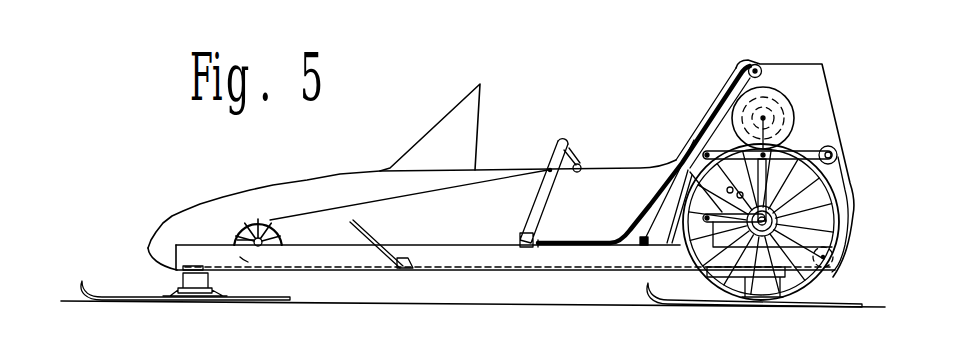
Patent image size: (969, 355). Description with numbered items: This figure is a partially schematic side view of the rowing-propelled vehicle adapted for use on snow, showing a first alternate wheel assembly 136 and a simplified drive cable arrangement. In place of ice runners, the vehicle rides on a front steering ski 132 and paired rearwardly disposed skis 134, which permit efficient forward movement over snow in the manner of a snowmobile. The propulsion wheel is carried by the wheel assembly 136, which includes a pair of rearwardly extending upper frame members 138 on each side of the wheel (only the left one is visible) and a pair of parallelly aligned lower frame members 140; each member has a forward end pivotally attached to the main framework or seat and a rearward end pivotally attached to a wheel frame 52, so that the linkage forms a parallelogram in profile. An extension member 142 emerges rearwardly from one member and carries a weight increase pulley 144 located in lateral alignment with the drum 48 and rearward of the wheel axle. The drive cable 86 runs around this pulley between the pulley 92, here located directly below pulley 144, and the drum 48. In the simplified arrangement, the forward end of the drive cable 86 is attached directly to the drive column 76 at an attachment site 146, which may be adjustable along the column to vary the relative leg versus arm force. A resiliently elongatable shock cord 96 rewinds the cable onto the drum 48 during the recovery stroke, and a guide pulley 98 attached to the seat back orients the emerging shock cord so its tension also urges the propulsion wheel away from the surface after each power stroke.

The drum 48 is at (772, 90).
The wheel frame 52 is at (770, 173).
The drive column 76 is at (533, 209).
The drive cable 86 is at (327, 205).
The pulley 92 is at (848, 238).
The shock cord 96 is at (730, 99).
The guide pulley 98 is at (743, 62).
The front steering ski 132 is at (142, 295).
The rearwardly disposed skis 134 is at (830, 303).
The first alternate wheel assembly 136 is at (803, 117).
The upper frame members 138 is at (718, 147).
The lower frame members 140 is at (677, 160).
The extension member 142 is at (817, 142).
The weight increase pulley 144 is at (847, 138).
The attachment site 146 is at (550, 170).